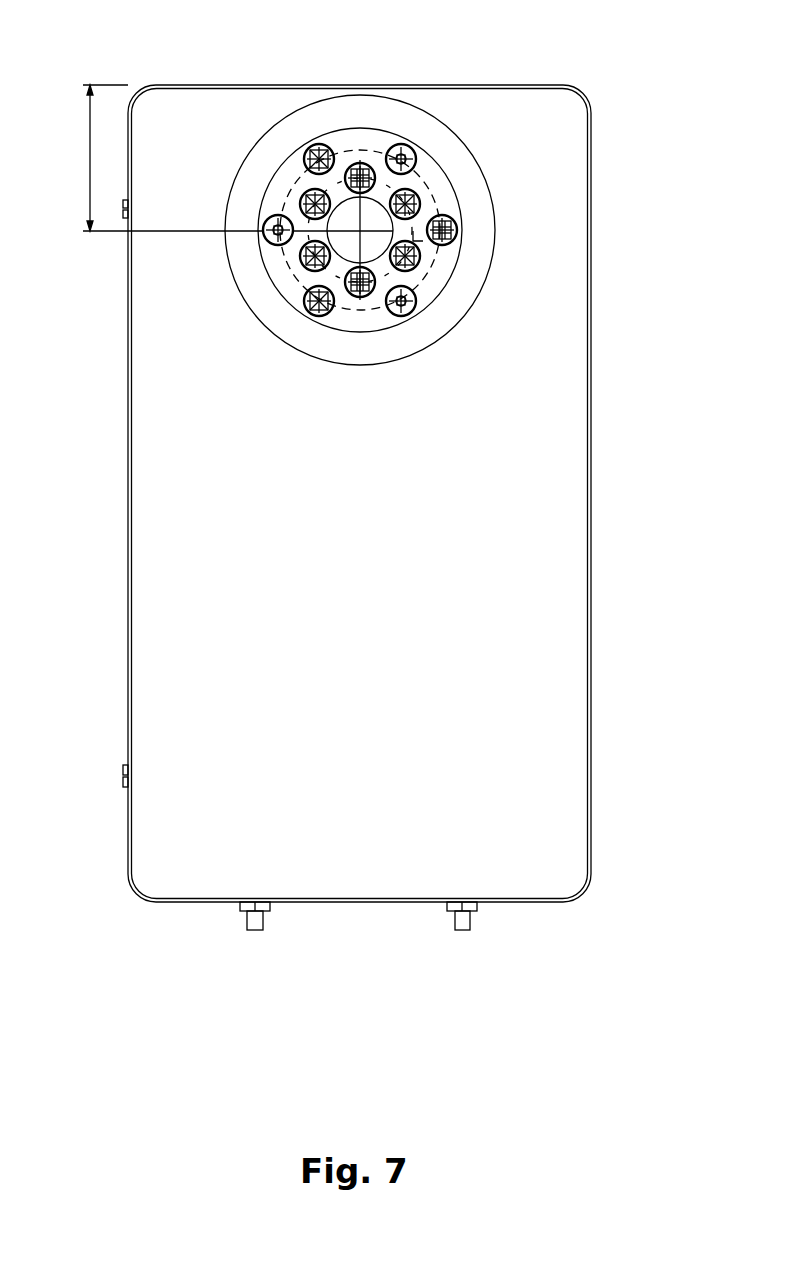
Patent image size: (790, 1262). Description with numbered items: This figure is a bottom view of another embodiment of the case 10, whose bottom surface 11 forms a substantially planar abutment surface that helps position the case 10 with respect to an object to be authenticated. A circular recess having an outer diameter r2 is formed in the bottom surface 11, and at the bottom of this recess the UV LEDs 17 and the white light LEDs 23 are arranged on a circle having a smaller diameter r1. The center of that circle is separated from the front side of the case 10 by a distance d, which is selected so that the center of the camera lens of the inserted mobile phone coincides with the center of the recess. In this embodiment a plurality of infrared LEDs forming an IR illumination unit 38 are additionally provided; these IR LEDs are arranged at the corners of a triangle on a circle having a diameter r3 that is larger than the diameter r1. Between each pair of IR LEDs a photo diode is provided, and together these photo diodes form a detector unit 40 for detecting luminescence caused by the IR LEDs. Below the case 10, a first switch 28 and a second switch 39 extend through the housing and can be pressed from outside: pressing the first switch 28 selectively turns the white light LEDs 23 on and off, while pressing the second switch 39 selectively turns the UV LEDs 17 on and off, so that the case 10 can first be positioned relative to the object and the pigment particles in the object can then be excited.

The case 10 is at (396, 493).
The bottom surface 11 is at (193, 882).
The UV LEDs 17 is at (362, 201).
The white light LEDs 23 is at (366, 256).
The first switch 28 is at (252, 930).
The IR illumination unit 38 is at (386, 178).
The second switch 39 is at (460, 930).
The detector unit 40 is at (379, 265).
The diameter of LED circle r1 is at (426, 239).
The outer diameter of recess r2 is at (496, 279).
The diameter of IR LED circle r3 is at (276, 182).
The distance d is at (156, 158).